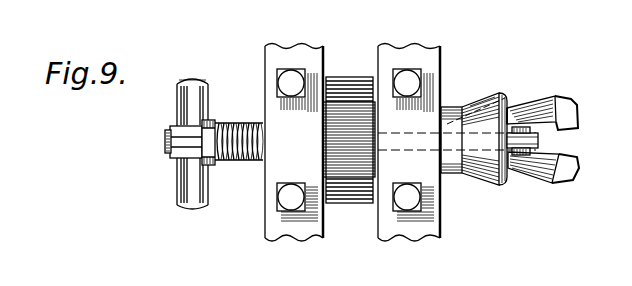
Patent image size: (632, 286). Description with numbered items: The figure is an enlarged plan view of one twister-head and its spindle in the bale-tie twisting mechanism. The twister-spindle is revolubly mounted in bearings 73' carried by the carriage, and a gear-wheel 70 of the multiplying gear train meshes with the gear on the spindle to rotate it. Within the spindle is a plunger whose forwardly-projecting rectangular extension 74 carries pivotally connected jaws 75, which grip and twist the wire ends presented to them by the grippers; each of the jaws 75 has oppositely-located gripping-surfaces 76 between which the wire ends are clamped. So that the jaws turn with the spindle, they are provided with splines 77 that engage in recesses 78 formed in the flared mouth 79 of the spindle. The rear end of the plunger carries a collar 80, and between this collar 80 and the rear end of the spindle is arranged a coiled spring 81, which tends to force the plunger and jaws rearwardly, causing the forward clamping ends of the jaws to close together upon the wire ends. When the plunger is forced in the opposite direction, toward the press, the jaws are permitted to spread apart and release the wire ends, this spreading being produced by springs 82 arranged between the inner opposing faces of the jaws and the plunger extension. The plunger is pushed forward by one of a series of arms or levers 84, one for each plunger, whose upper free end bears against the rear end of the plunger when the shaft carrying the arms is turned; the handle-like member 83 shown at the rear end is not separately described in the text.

The gear-wheel 70 is at (360, 202).
The bearings 73' is at (352, 143).
The rectangular extension 74 is at (535, 136).
The jaws 75 is at (538, 103).
The gripping-surfaces 76 is at (579, 119).
The splines 77 is at (523, 100).
The recesses 78 is at (485, 117).
The flared mouth 79 is at (485, 182).
The collar 80 is at (213, 122).
The coiled spring 81 is at (241, 154).
The springs 82 is at (522, 127).
The handle 83 is at (175, 144).
The arms or levers 84 is at (165, 141).